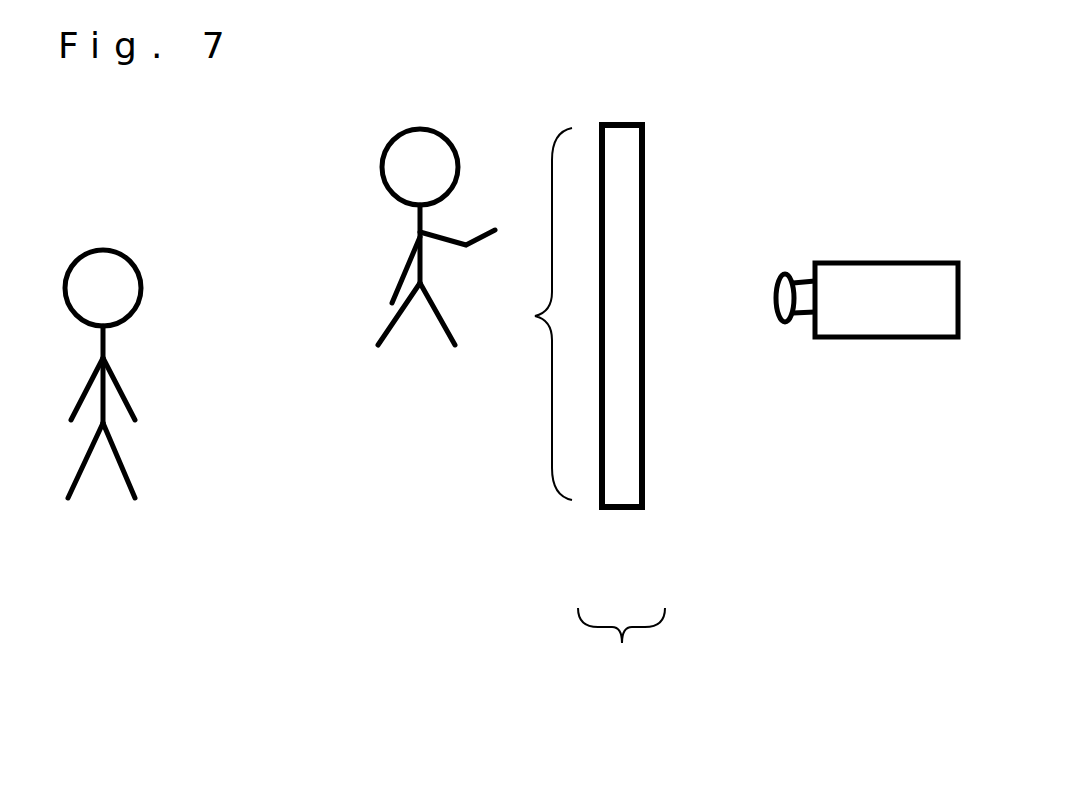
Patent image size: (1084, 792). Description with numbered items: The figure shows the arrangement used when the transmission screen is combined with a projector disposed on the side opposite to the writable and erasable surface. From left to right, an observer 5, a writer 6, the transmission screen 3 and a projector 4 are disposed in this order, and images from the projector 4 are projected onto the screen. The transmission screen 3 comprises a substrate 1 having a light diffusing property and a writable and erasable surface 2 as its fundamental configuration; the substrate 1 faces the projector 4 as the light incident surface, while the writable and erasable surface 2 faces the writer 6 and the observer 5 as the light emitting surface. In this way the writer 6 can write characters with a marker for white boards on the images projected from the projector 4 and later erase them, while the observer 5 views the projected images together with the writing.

The substrate 1 is at (617, 467).
The writable and erasable surface 2 is at (530, 314).
The transmission screen 3 is at (621, 652).
The projector 4 is at (881, 337).
The observer 5 is at (105, 507).
The writer 6 is at (418, 347).